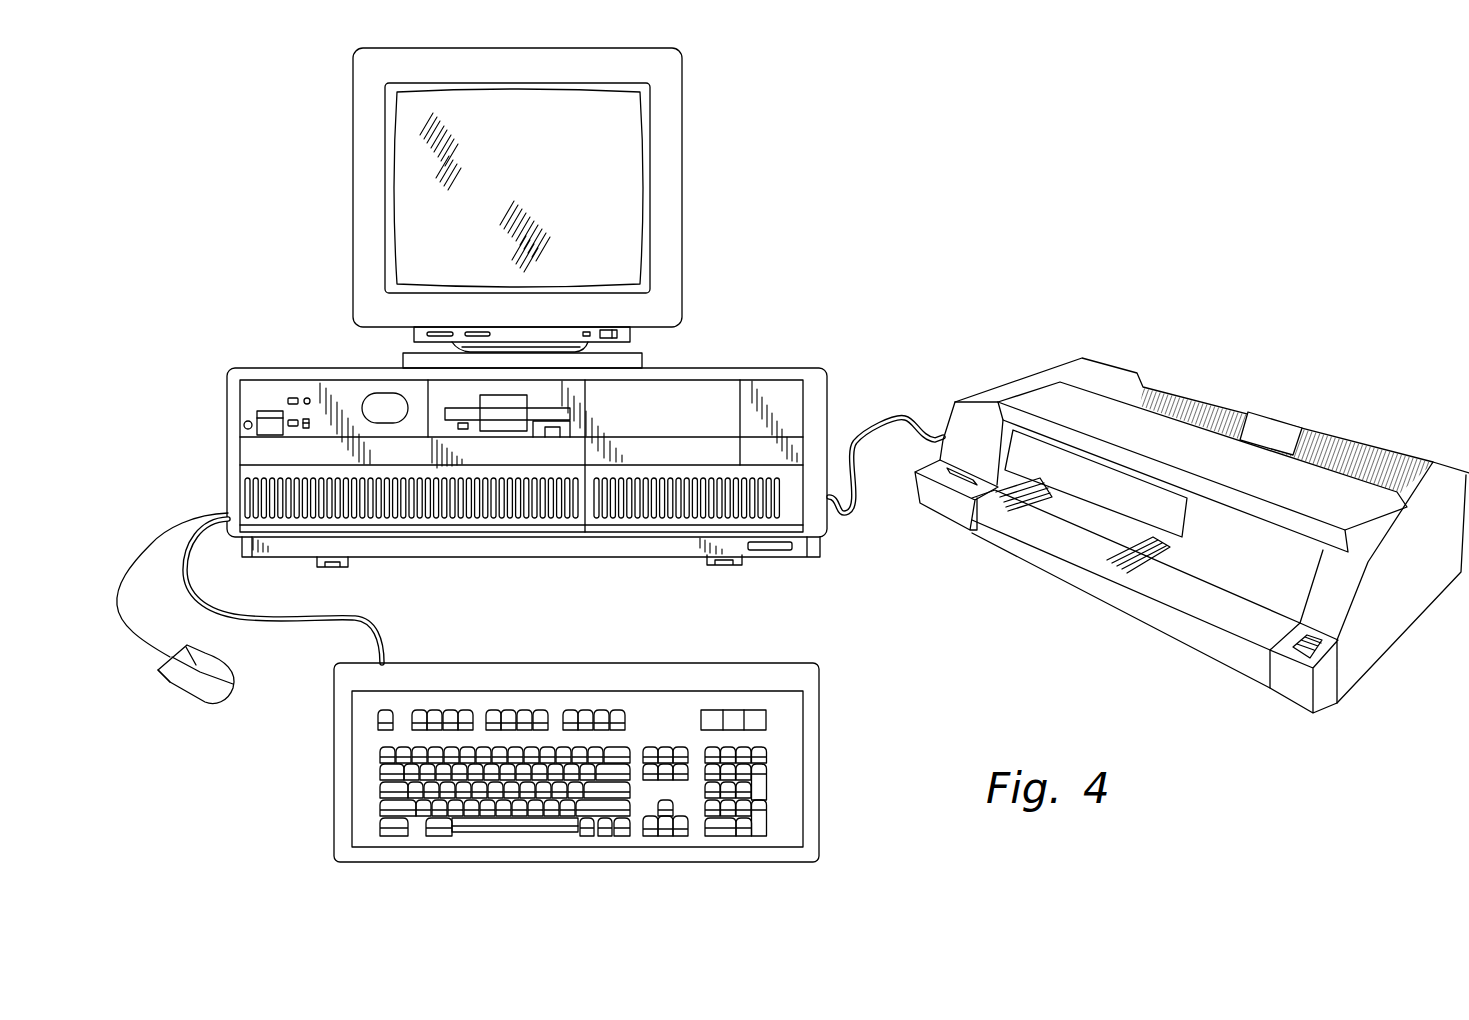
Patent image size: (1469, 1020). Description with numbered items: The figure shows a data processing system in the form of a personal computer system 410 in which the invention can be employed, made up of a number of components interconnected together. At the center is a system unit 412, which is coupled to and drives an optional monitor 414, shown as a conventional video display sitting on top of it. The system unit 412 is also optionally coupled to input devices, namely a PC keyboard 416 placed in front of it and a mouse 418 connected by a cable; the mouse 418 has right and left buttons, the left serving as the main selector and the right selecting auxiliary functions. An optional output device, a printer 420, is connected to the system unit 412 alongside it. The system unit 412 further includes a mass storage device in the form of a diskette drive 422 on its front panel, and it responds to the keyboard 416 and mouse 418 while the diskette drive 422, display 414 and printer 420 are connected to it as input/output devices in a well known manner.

The personal computer system 410 is at (946, 222).
The system unit 412 is at (527, 445).
The monitor 414 is at (697, 217).
The PC keyboard 416 is at (690, 650).
The mouse 418 is at (177, 685).
The printer 420 is at (1017, 367).
The diskette drive 422 is at (513, 420).